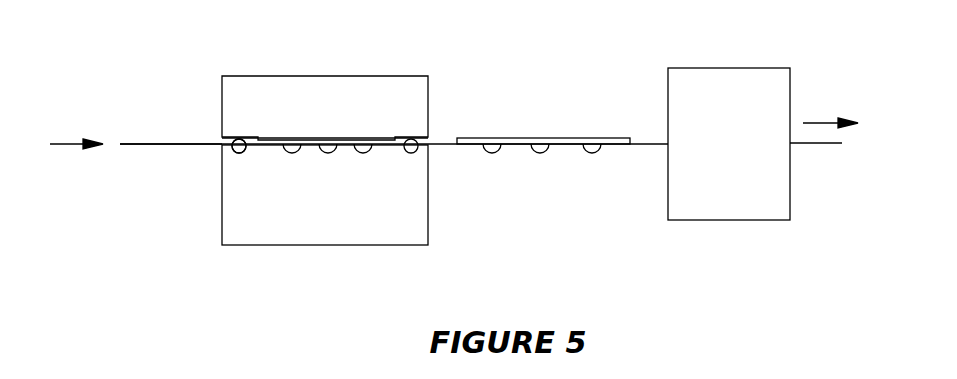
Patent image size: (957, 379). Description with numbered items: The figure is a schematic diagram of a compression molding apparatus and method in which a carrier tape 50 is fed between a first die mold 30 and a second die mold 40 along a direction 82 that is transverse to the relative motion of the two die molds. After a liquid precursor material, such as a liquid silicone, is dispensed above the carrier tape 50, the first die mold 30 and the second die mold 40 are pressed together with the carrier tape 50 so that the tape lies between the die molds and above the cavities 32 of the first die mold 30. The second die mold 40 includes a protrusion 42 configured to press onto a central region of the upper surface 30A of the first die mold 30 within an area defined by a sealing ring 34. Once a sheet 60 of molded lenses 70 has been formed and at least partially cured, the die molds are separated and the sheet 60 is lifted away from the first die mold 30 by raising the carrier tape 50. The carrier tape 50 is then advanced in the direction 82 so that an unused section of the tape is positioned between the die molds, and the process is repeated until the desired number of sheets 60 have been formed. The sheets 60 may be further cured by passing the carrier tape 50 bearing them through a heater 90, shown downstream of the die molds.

The first die mold 30 is at (393, 246).
The upper surface of the first die mold 30A is at (382, 139).
The cavities 32 is at (329, 153).
The sealing ring 34 is at (231, 156).
The second die mold 40 is at (357, 76).
The protrusion 42 is at (299, 139).
The carrier tape 50 is at (152, 143).
The sheet 60 is at (610, 145).
The molded lenses 70 is at (292, 154).
The direction 82 is at (62, 144).
The heater 90 is at (729, 144).